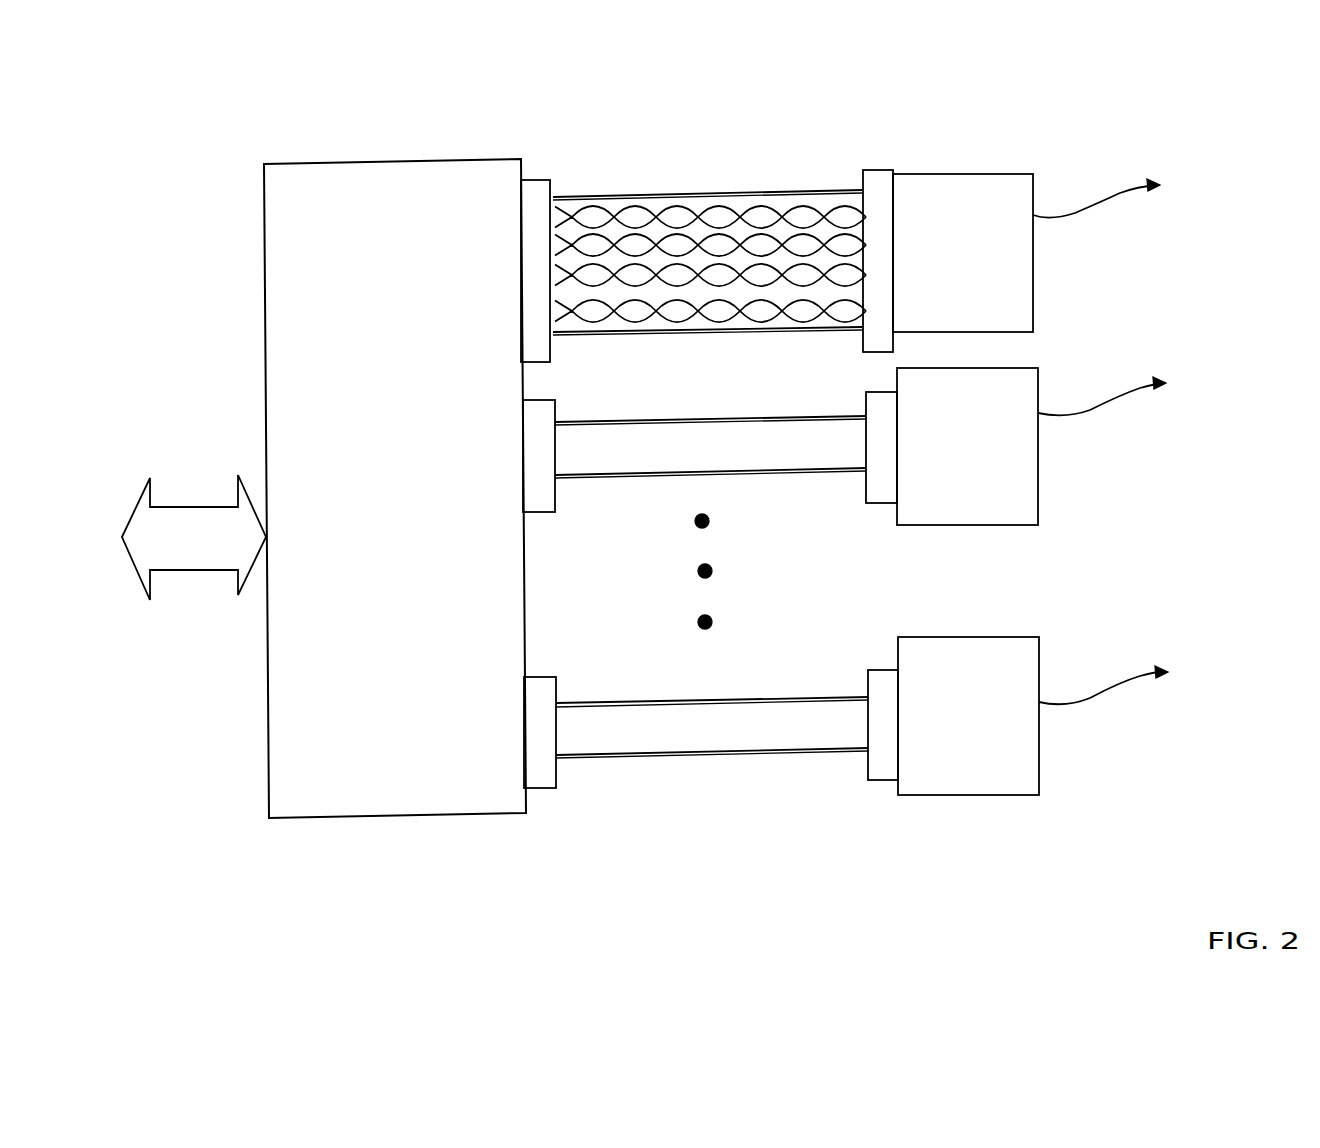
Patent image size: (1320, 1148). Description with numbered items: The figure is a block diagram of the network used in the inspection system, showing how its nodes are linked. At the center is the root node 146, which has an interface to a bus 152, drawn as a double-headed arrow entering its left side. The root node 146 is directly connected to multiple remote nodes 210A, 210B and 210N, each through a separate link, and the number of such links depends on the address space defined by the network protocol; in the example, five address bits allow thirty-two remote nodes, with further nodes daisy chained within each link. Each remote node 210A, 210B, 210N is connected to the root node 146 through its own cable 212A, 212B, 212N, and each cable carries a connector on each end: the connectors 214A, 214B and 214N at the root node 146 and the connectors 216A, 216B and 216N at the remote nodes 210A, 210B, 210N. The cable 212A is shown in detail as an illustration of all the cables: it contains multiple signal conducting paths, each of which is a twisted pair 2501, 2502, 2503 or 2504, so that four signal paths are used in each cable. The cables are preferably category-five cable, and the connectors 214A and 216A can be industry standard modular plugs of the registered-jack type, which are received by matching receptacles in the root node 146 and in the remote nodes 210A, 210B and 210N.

The root node 146 is at (358, 147).
The bus 152 is at (186, 495).
The connector 214A is at (535, 169).
The connector 214B is at (535, 398).
The connector 214N is at (537, 675).
The cable 212A is at (709, 251).
The cable 212B is at (623, 407).
The cable 212N is at (647, 693).
The twisted pair 2501 is at (657, 202).
The twisted pair 2502 is at (697, 237).
The twisted pair 2503 is at (723, 280).
The twisted pair 2504 is at (763, 323).
The connector 216A is at (882, 155).
The connector 216B is at (852, 400).
The connector 216N is at (878, 668).
The remote node 210A is at (963, 163).
The remote node 210B is at (1030, 367).
The remote node 210N is at (998, 622).